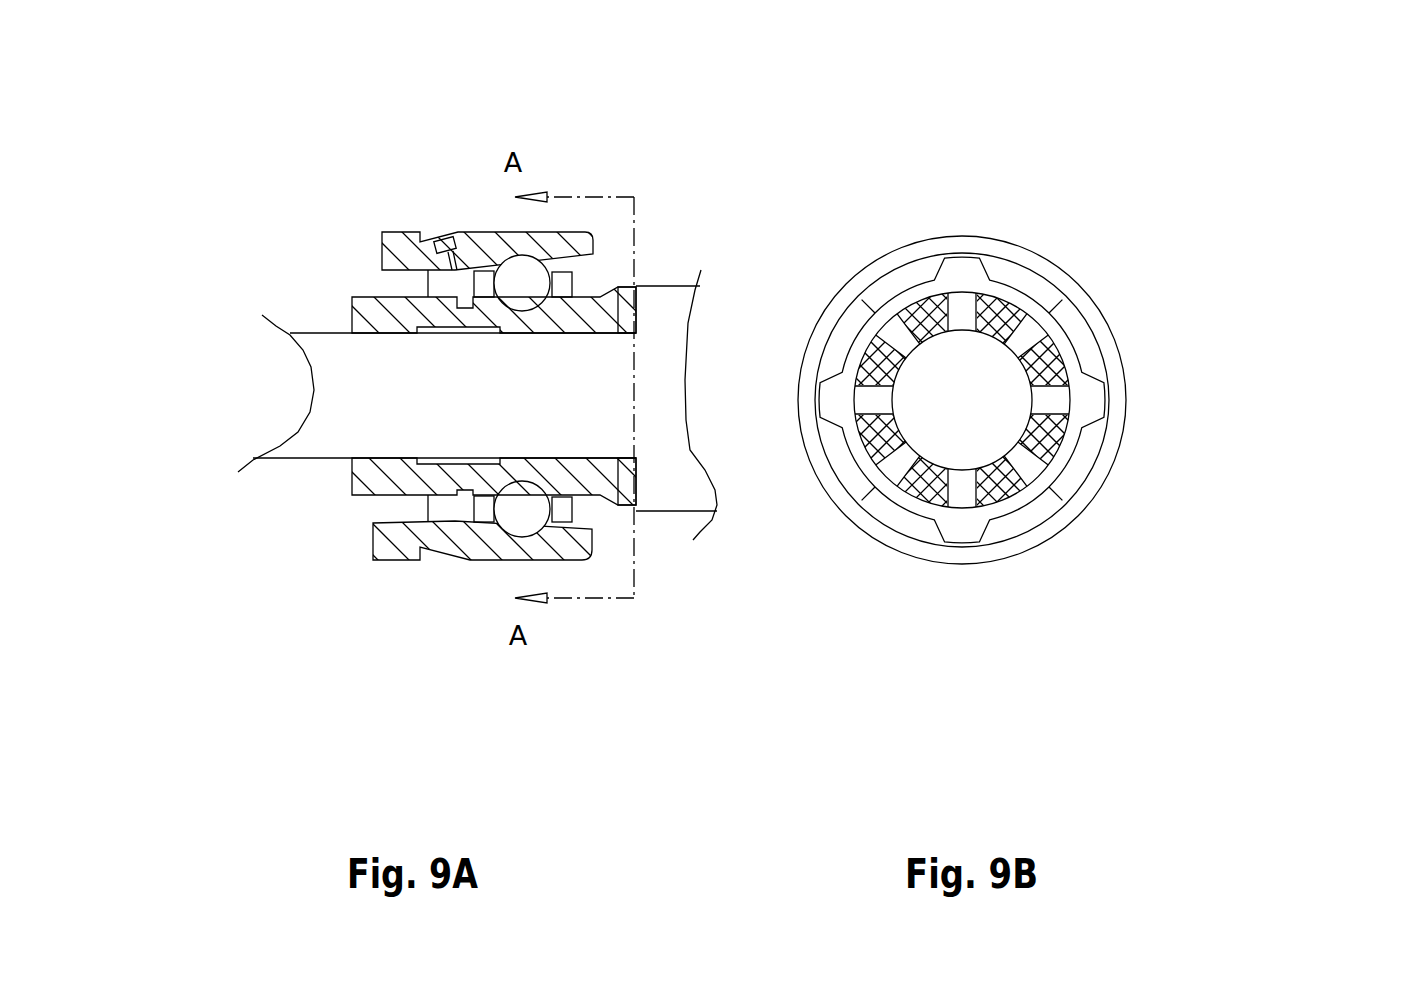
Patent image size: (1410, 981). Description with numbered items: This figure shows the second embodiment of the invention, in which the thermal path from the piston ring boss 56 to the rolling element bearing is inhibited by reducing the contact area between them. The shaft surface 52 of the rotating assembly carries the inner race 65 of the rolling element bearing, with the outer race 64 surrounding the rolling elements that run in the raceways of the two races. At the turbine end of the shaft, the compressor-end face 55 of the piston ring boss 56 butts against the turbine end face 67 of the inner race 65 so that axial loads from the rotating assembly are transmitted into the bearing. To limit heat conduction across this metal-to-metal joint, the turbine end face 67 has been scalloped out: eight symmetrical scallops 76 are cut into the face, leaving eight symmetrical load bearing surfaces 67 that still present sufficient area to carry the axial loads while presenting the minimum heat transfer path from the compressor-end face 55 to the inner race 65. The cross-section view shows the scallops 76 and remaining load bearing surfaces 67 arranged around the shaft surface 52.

In FIG. 9A, the shaft surface 52 is at (332, 332).
In FIG. 9B, the shaft surface 52 is at (994, 462).
In FIG. 9A, the piston ring boss 56 is at (665, 307).
In FIG. 9A, the outer race 64 is at (470, 537).
In FIG. 9A, the inner race 65 is at (357, 493).
In FIG. 9A, the turbine end face 67 is at (633, 480).
In FIG. 9B, the turbine end face 67 is at (923, 477).
In FIG. 9A, the compressor-end face 55 is at (633, 480).
In FIG. 9B, the scallops 76 is at (1028, 465).